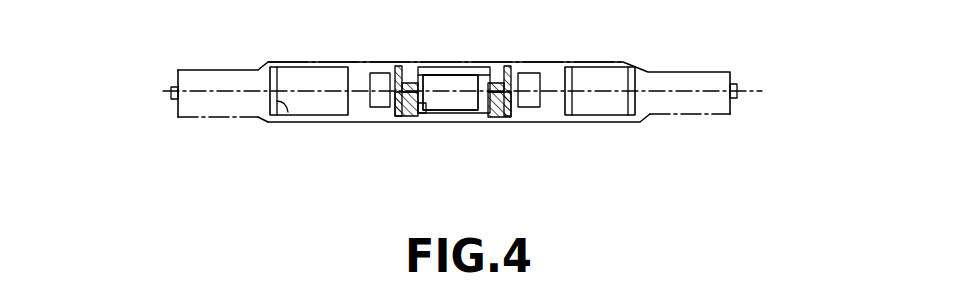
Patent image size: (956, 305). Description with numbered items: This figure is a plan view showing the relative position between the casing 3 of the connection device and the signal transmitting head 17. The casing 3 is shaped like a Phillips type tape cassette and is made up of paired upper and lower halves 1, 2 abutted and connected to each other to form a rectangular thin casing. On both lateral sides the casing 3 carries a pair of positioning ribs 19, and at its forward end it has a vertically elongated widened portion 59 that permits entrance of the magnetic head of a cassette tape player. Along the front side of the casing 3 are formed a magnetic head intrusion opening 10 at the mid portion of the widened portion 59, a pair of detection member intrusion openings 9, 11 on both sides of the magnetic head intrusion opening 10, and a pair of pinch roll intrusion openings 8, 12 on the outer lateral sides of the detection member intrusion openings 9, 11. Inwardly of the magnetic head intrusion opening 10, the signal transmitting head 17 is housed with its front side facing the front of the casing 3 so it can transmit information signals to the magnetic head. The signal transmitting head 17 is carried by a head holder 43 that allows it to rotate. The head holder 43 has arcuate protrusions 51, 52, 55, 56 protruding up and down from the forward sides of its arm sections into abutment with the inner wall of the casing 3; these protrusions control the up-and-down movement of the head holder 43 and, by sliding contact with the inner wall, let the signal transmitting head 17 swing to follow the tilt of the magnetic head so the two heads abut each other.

The upper half 1 is at (708, 76).
The lower half 2 is at (707, 115).
The casing 3 is at (660, 66).
The pinch roll intrusion opening 8 is at (287, 106).
The detection member intrusion opening 9 is at (375, 107).
The magnetic head intrusion opening 10 is at (430, 112).
The detection member intrusion opening 11 is at (524, 107).
The pinch roll intrusion opening 12 is at (572, 100).
The signal transmitting head 17 is at (458, 95).
The positioning rib 19 is at (168, 92).
The head holder 43 is at (495, 65).
The arcuate protrusion 51 is at (508, 66).
The arcuate protrusion 52 is at (512, 120).
The arcuate protrusion 55 is at (399, 66).
The arcuate protrusion 56 is at (407, 116).
The widened portion 59 is at (596, 58).